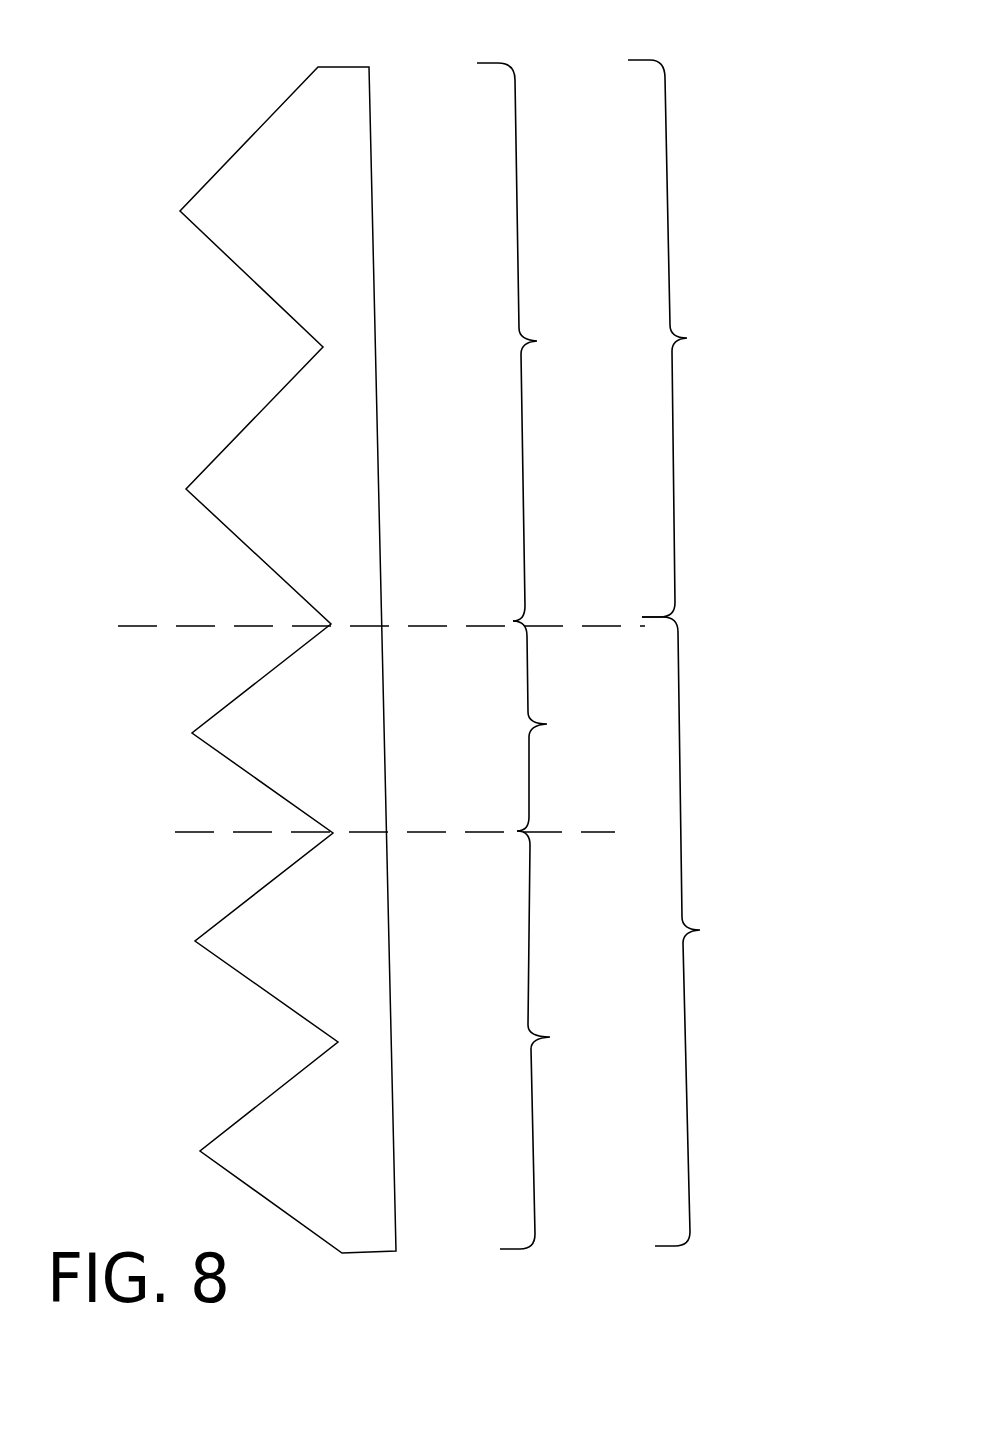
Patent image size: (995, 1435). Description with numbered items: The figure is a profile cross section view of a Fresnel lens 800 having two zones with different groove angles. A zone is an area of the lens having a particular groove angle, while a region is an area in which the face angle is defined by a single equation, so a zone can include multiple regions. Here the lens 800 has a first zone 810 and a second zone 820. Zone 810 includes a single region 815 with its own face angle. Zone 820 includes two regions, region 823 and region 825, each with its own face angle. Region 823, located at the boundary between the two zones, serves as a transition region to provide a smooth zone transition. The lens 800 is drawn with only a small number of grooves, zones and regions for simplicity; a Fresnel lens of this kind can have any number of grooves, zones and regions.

The lens 800 is at (373, 103).
The zone 810 is at (720, 338).
The region 815 is at (563, 342).
The zone 820 is at (734, 931).
The transition region 823 is at (586, 726).
The region 825 is at (581, 1040).